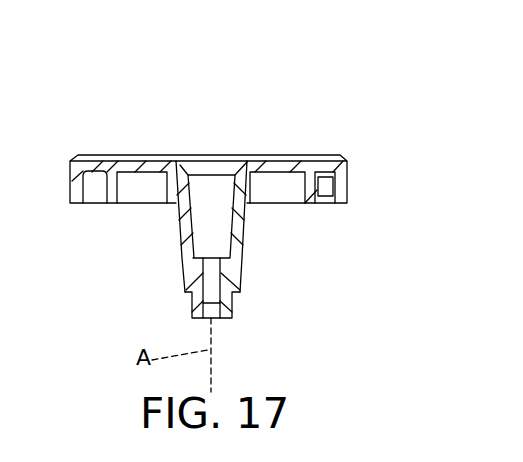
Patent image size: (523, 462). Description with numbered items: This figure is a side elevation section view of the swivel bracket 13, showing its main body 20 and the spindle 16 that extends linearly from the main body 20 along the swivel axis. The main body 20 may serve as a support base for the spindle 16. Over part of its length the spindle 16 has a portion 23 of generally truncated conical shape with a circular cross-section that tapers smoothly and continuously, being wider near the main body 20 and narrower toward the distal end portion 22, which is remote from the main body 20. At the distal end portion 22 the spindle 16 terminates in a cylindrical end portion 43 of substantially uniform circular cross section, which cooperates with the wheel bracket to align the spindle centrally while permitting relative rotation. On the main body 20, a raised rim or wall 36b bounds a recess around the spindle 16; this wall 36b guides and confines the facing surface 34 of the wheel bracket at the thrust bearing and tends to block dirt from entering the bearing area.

The swivel bracket 13 is at (248, 222).
The main body 20 is at (248, 207).
The raised surface portion, rim or wall 36b is at (312, 201).
The surface of the wheel bracket 34 is at (145, 192).
The truncated conical portion 23 is at (245, 228).
The spindle 16 is at (267, 265).
The distal end portion 22 is at (268, 313).
The cylindrical end portion 43 is at (230, 312).